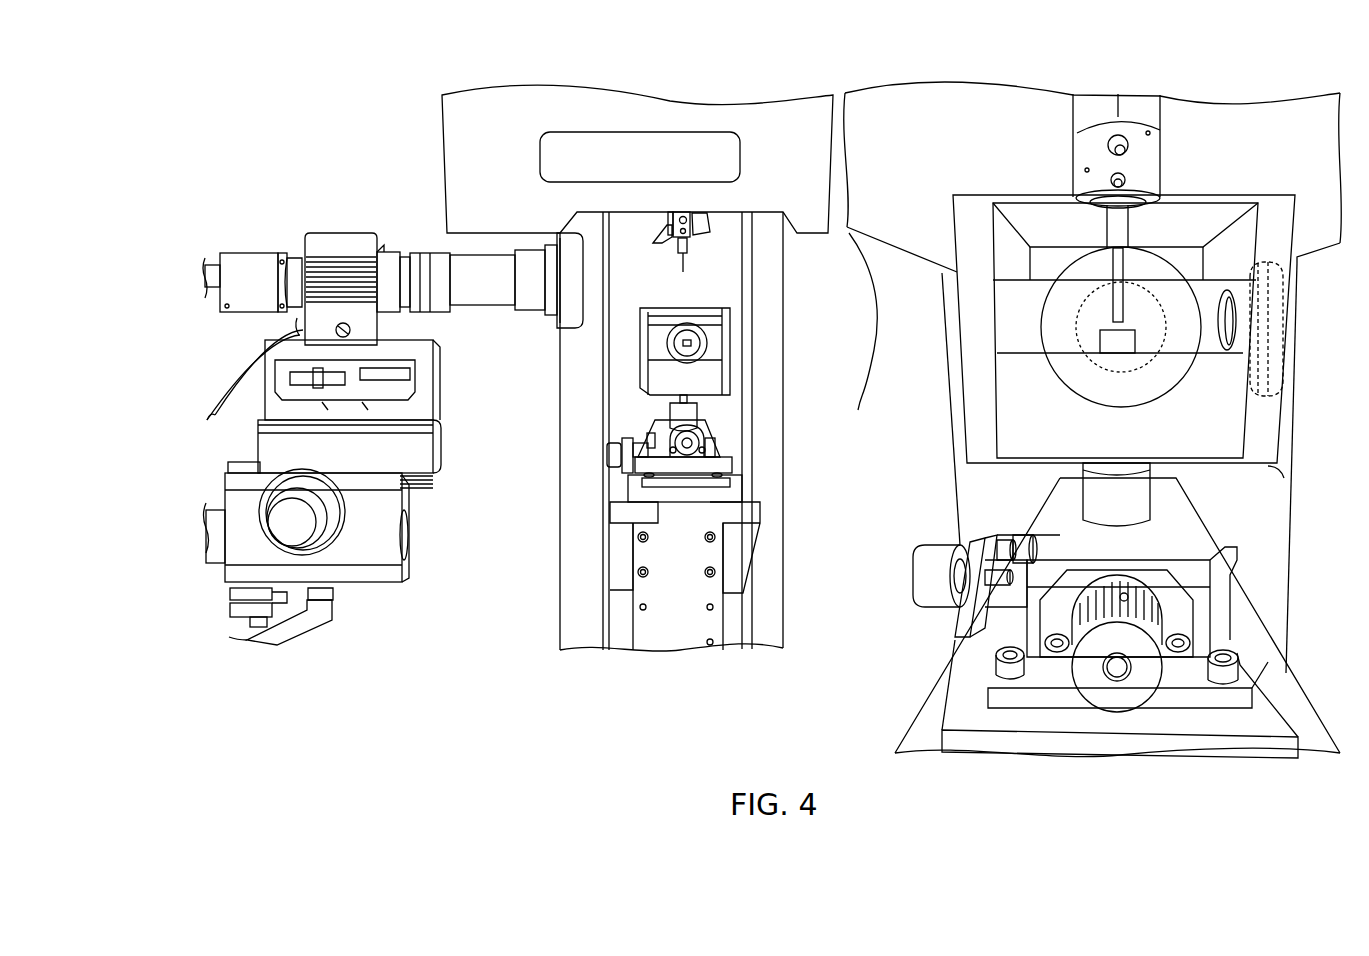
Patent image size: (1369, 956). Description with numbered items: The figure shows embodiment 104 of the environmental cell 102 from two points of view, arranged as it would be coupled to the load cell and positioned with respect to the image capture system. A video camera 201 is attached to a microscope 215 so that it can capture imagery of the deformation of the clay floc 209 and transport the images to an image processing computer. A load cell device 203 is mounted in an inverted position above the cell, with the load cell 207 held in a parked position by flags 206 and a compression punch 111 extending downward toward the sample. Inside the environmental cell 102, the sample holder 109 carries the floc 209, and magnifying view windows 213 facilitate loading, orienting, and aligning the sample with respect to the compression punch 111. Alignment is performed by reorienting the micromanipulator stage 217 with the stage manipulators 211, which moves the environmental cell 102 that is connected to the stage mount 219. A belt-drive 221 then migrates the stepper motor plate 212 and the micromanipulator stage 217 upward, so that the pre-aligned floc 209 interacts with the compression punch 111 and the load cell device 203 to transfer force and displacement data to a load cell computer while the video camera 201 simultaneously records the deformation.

The embodiment 104 is at (358, 128).
The video camera 201 is at (313, 238).
The microscope 215 is at (447, 257).
The load cell device 203 is at (548, 163).
The load cell 207 is at (693, 214).
The flags 206 is at (667, 240).
The compression punch 111 is at (682, 266).
The environmental cell 102 is at (672, 320).
The magnifying view windows 213 is at (697, 338).
The clay floc 209 is at (1130, 323).
The sample holder 109 is at (1110, 338).
The stage mount 219 is at (692, 423).
The micromanipulator stage 217 is at (742, 472).
The stage manipulators 211 is at (668, 450).
The stepper motor plate 212 is at (625, 511).
The belt-drive 221 is at (660, 595).